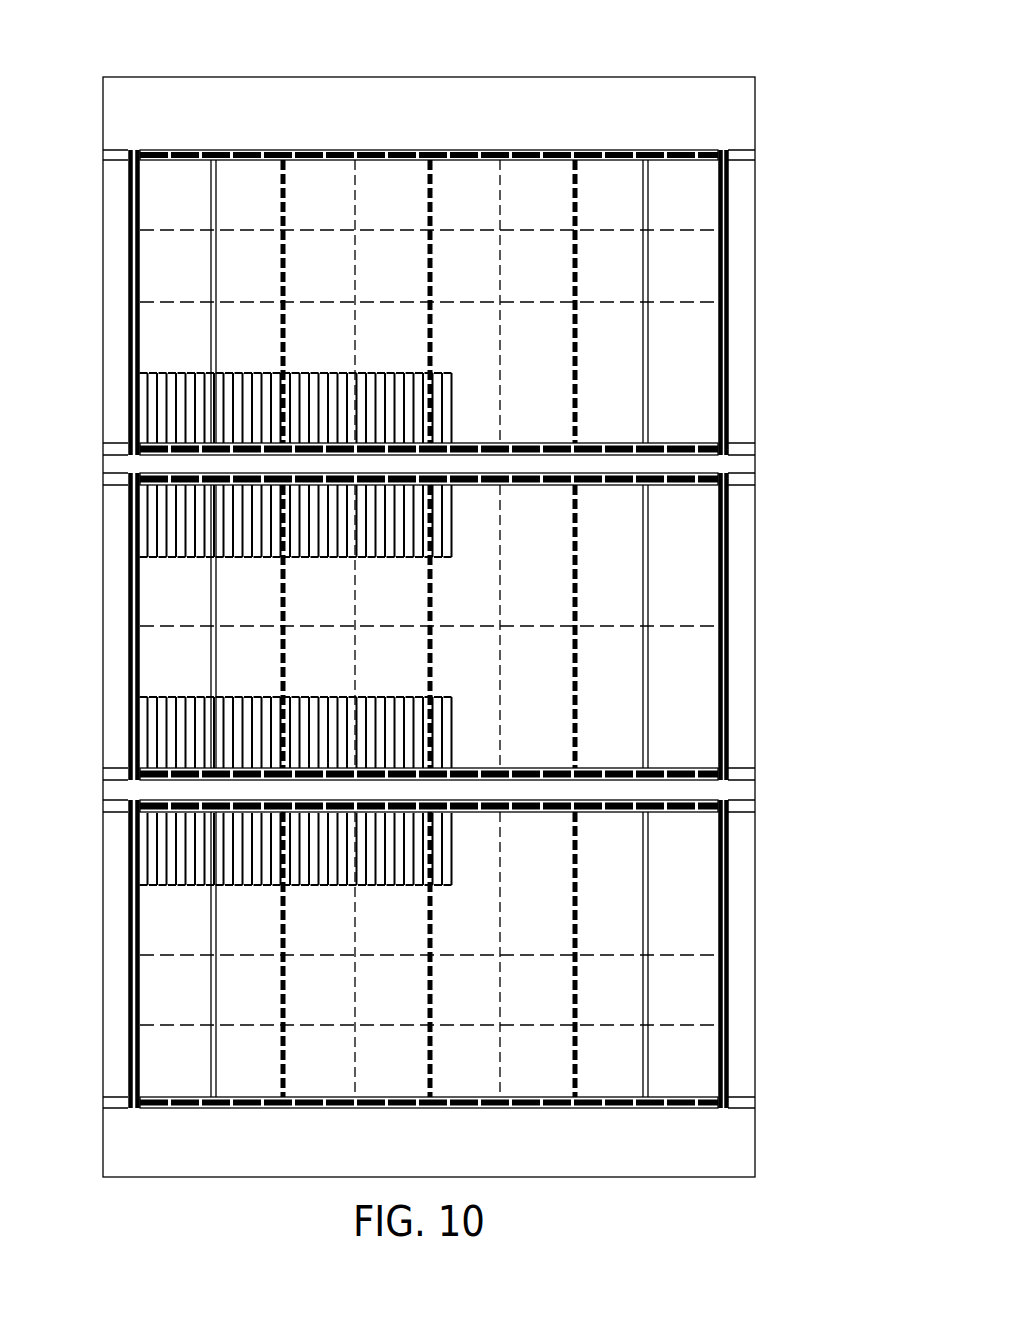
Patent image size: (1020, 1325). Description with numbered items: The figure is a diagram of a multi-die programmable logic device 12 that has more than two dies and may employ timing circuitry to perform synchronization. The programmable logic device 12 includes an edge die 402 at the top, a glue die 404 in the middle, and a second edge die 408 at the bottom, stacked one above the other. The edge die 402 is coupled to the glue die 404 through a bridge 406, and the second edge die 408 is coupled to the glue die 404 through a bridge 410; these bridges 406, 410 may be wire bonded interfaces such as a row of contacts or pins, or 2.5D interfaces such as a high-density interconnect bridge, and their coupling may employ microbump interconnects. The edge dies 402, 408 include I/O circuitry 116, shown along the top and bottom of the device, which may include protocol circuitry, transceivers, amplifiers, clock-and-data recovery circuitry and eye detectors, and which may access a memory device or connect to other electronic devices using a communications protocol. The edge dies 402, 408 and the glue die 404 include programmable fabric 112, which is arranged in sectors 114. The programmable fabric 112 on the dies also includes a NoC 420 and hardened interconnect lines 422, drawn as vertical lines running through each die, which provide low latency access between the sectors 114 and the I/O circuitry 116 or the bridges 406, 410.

The programmable logic device 12 is at (51, 69).
The programmable fabric 112 is at (690, 208).
The sector 114 is at (163, 210).
The I/O circuitry 116 is at (446, 128).
The edge die 402 is at (800, 299).
The glue die 404 is at (805, 651).
The bridge 406 is at (760, 433).
The second edge die 408 is at (805, 981).
The bridge 410 is at (760, 758).
The NoC 420 is at (432, 357).
The hardened interconnect lines 422 is at (213, 357).